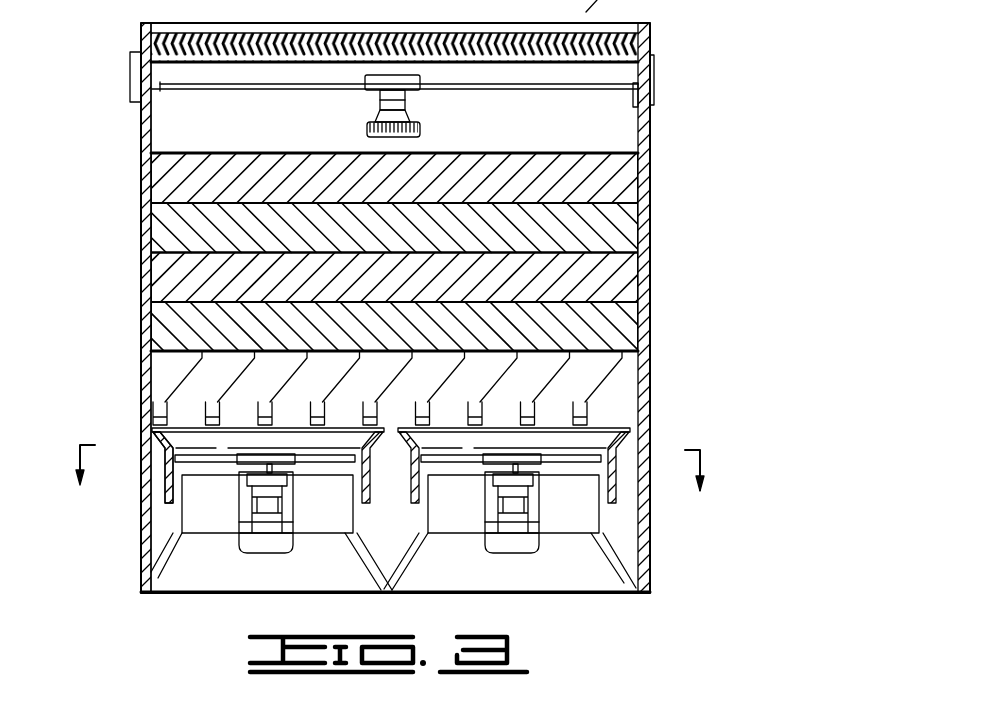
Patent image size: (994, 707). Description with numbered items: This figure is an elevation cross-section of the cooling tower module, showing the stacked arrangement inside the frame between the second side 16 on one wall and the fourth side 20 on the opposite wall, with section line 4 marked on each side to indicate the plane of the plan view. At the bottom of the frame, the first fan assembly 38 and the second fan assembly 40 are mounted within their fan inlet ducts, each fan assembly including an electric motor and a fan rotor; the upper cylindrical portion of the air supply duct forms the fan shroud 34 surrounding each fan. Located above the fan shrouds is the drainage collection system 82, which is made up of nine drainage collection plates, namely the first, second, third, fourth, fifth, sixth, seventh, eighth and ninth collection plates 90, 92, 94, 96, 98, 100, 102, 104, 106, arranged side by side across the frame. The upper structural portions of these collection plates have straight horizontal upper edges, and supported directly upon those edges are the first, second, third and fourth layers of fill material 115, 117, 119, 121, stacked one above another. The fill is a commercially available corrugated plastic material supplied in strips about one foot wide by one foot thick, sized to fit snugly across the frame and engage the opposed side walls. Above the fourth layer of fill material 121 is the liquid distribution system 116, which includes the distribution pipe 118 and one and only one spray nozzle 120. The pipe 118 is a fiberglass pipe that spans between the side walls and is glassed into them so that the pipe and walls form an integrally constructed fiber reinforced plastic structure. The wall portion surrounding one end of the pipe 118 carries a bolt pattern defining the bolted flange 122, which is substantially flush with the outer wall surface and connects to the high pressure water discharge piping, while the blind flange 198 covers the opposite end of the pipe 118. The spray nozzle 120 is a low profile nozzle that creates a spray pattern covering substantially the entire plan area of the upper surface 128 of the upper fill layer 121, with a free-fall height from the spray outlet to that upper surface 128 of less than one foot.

The second side 16 is at (645, 113).
The fourth side 20 is at (140, 156).
The blind flange 198 is at (130, 70).
The bolted flange 122 is at (657, 72).
The liquid distribution system 116 is at (195, 82).
The distribution pipe 118 is at (399, 94).
The spray nozzle 120 is at (404, 122).
The upper surface 128 is at (592, 155).
The fourth layer of fill material 121 is at (374, 178).
The third layer of fill material 119 is at (404, 228).
The second layer of fill material 117 is at (373, 278).
The first layer of fill material 115 is at (402, 326).
The drainage collection system 82 is at (606, 384).
The first drainage collection plate 90 is at (191, 371).
The second drainage collection plate 92 is at (242, 373).
The third drainage collection plate 94 is at (293, 375).
The fourth drainage collection plate 96 is at (340, 381).
The fifth drainage collection plate 98 is at (395, 378).
The sixth drainage collection plate 100 is at (441, 386).
The seventh drainage collection plate 102 is at (493, 386).
The eighth drainage collection plate 104 is at (546, 386).
The ninth drainage collection plate 106 is at (598, 386).
The fan shroud 34 is at (165, 500).
The first fan assembly 38 is at (260, 542).
The second fan assembly 40 is at (511, 543).
The section line 4- 4 is at (388, 483).